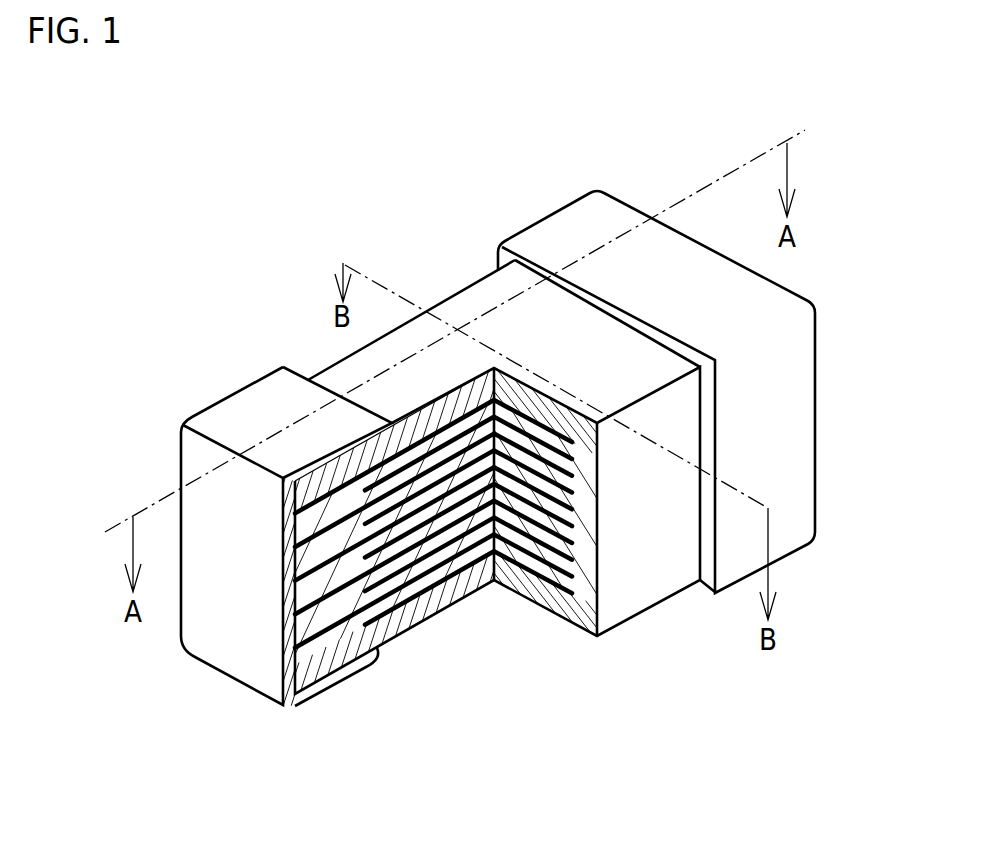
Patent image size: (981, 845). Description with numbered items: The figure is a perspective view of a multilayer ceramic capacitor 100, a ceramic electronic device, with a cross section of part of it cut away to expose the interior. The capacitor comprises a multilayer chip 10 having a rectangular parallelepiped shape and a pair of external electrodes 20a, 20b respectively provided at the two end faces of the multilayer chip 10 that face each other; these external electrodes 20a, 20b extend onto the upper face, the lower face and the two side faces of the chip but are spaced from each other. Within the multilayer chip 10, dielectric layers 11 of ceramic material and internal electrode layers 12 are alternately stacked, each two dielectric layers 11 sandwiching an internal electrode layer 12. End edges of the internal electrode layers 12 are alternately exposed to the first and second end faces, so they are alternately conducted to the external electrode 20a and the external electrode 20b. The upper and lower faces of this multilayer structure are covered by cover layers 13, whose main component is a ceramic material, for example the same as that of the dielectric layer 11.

The multilayer ceramic capacitor 100 is at (916, 114).
The multilayer chip 10 is at (328, 360).
The dielectric layer 11 is at (423, 568).
The internal electrode layer 12 is at (404, 628).
The cover layer 13 is at (465, 305).
The external electrode 20a is at (213, 407).
The external electrode 20b is at (553, 230).